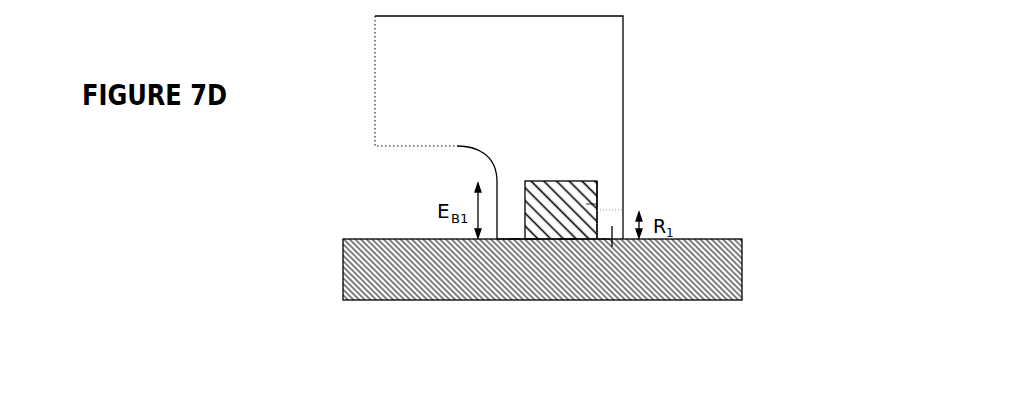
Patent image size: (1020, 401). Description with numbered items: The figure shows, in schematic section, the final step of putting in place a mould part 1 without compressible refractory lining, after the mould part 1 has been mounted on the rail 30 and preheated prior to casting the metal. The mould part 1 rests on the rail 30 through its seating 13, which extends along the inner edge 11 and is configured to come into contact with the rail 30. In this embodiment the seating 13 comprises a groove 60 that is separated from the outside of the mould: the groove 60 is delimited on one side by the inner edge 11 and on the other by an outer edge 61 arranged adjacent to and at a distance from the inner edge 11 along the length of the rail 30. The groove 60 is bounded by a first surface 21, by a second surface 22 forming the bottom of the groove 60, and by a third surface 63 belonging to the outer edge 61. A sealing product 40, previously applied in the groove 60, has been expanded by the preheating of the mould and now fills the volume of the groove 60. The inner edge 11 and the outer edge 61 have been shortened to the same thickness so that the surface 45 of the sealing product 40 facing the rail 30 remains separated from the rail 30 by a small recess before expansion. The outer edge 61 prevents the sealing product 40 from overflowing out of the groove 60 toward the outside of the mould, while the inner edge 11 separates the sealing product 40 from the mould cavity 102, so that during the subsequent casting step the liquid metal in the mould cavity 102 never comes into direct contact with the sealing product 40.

The mould part 1 is at (605, 70).
The mould cavity 102 is at (442, 178).
The second surface 22 is at (558, 181).
The sealing product 40 is at (597, 192).
The groove 60 is at (588, 207).
The third surface 63 is at (586, 212).
The rail 30 is at (727, 272).
The inner edge 11 is at (505, 236).
The seating 13 is at (513, 236).
The first surface 21 is at (530, 236).
The surface of the sealing product 45 is at (567, 236).
The outer edge 61 is at (612, 247).